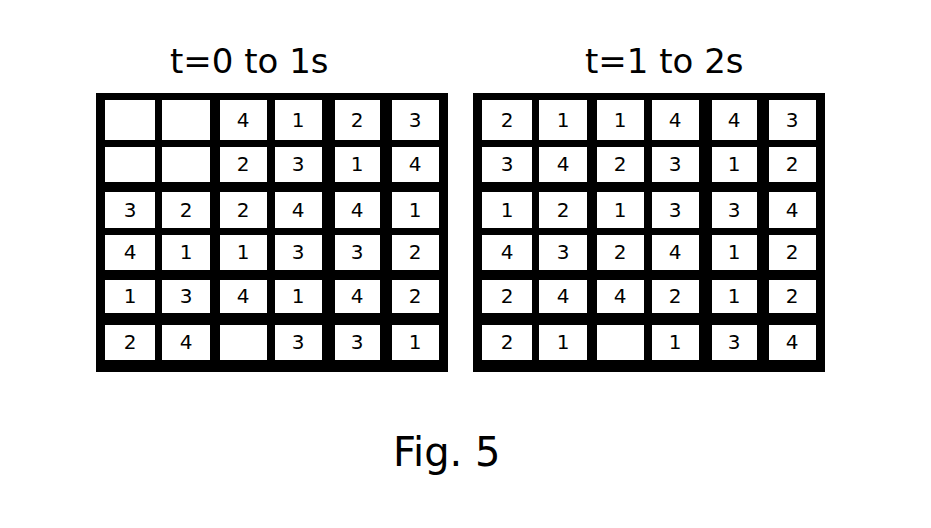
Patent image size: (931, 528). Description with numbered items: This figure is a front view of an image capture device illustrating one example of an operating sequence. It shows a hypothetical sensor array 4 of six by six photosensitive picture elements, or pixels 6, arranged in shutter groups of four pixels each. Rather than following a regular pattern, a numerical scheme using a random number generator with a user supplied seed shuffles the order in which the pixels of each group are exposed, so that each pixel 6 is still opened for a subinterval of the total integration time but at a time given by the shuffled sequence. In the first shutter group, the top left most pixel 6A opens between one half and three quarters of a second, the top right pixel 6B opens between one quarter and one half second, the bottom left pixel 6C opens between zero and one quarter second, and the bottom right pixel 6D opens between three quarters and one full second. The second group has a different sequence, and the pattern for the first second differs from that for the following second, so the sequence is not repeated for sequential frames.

The sensor 4 is at (400, 100).
The pixel 6 is at (233, 355).
The top left pixel 6A is at (120, 107).
The top right pixel 6B is at (177, 108).
The bottom left pixel 6C is at (123, 155).
The bottom right pixel 6D is at (175, 177).